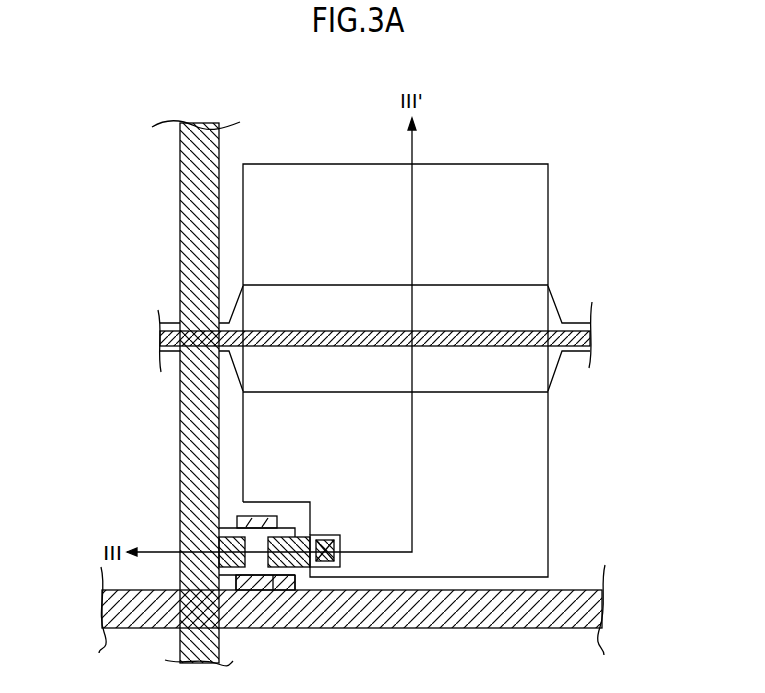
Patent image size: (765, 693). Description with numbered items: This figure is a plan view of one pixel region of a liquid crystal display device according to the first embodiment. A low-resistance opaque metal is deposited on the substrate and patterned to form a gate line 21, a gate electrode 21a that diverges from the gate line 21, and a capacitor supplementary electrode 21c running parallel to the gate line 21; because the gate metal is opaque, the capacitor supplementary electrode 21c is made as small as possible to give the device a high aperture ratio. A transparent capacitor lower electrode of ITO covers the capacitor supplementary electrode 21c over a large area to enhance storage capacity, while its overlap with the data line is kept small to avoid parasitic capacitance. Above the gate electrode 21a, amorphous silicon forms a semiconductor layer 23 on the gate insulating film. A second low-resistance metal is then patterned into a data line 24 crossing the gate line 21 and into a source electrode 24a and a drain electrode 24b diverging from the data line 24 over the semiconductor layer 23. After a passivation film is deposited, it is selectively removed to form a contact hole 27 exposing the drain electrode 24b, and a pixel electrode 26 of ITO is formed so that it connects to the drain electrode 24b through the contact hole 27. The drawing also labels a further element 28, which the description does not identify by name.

The gate line 21 is at (500, 614).
The gate electrode 21a is at (255, 585).
The capacitor supplementary electrode 21c is at (586, 326).
The semiconductor layer 23 is at (258, 530).
The data line 24 is at (198, 447).
The source electrode 24a is at (228, 548).
The drain electrode 24b is at (298, 563).
The pixel electrode 26 is at (550, 476).
The contact hole 27 is at (330, 556).
The storage electrode 28 is at (550, 290).